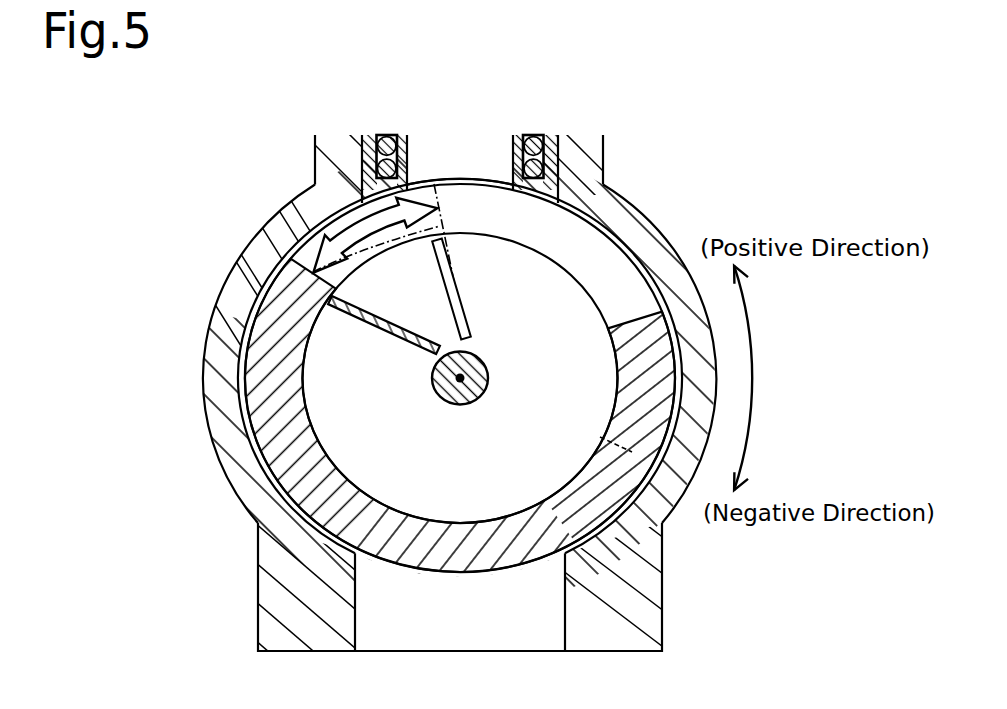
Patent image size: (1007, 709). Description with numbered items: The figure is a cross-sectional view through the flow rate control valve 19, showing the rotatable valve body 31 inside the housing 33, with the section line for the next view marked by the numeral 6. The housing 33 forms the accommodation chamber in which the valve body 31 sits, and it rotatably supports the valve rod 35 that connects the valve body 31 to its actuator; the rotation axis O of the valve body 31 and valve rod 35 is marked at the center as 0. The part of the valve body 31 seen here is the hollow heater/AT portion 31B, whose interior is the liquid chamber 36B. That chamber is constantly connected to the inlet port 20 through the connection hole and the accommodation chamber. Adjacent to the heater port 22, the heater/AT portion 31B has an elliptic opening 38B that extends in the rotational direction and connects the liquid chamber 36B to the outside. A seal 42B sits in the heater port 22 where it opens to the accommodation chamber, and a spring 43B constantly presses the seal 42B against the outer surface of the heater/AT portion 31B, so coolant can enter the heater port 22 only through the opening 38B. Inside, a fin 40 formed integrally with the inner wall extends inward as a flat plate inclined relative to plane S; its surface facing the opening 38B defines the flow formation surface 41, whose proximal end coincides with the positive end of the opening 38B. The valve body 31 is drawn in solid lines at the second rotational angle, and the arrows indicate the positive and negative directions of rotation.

The flow rate control valve 19 is at (160, 233).
The housing 33 is at (225, 434).
The inlet port 20 is at (461, 641).
The heater port 22 is at (491, 150).
The seal 42B is at (392, 137).
The spring 43B is at (408, 152).
The valve body 31 is at (460, 378).
The heater/AT portion 31B is at (462, 573).
The liquid chamber 36B is at (460, 378).
The opening 38B is at (483, 219).
The valve rod 35 is at (489, 378).
The rotation axis 0 is at (456, 378).
The flow formation surface 41 is at (395, 324).
The fin 40 is at (447, 347).
The section line VI-VI 6 is at (633, 178).